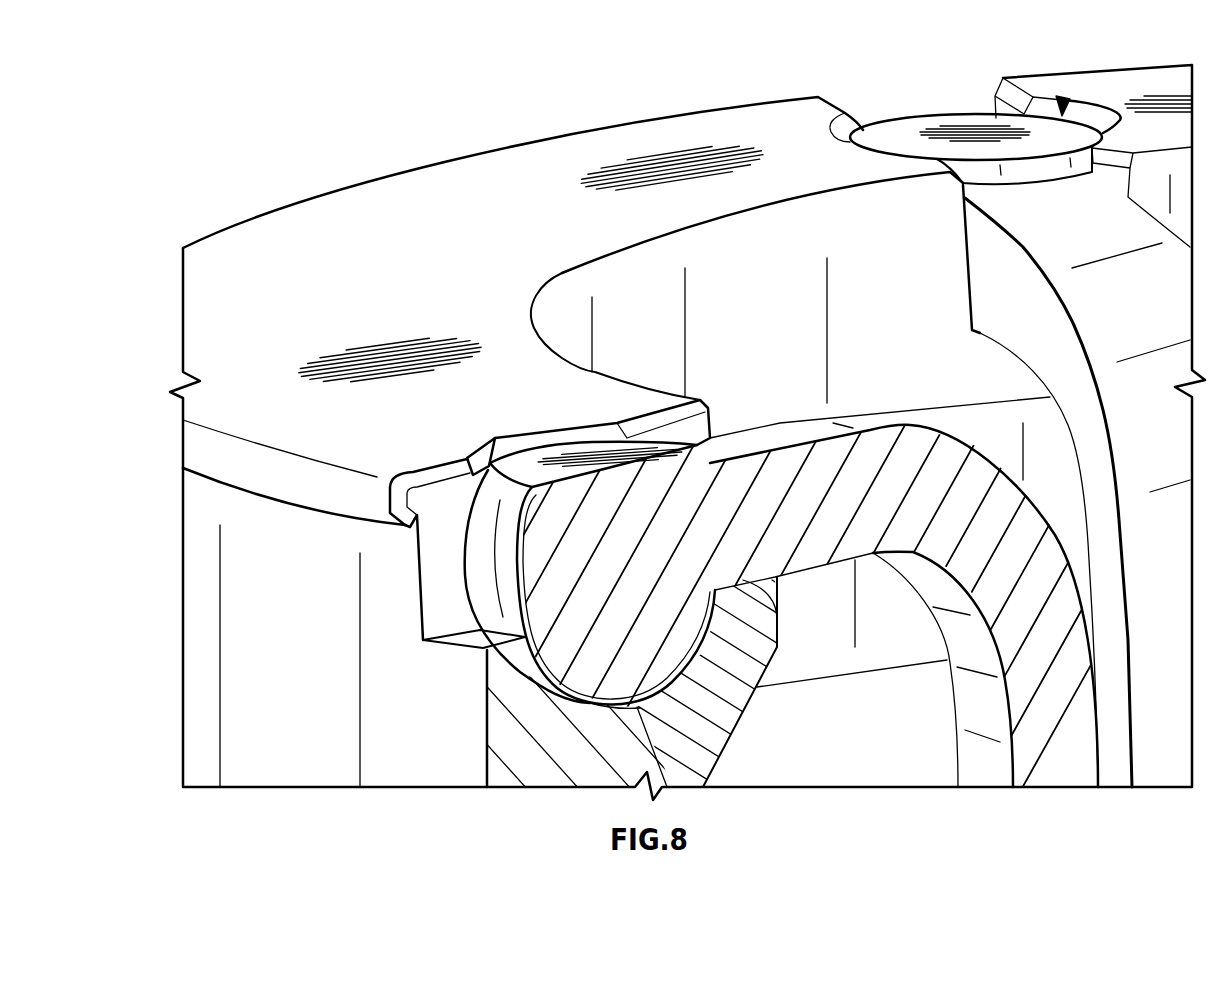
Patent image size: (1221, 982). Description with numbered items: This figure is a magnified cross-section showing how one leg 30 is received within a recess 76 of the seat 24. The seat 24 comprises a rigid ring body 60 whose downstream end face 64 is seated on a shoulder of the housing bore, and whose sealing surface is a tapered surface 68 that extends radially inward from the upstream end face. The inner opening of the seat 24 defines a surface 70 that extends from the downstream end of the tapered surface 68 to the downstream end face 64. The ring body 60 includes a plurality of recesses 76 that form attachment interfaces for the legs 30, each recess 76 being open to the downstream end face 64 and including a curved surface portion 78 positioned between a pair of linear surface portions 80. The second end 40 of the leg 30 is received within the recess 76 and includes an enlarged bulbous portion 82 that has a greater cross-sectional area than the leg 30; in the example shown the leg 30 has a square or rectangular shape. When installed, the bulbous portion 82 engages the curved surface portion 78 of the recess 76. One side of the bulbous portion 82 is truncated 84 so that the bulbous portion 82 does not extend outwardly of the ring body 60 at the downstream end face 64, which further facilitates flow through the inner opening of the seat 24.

The seat 24 is at (270, 228).
The downstream end face 64 is at (612, 153).
The surface 70 is at (578, 300).
The truncated side 84 is at (955, 135).
The recess 76 is at (486, 446).
The second end 40 is at (478, 600).
The leg 30 is at (1050, 377).
The bulbous portion 82 is at (645, 594).
The linear surface portion 80 is at (500, 657).
The tapered surface 68 is at (742, 712).
The curved surface portion 78 is at (634, 708).
The ring body 60 is at (300, 597).